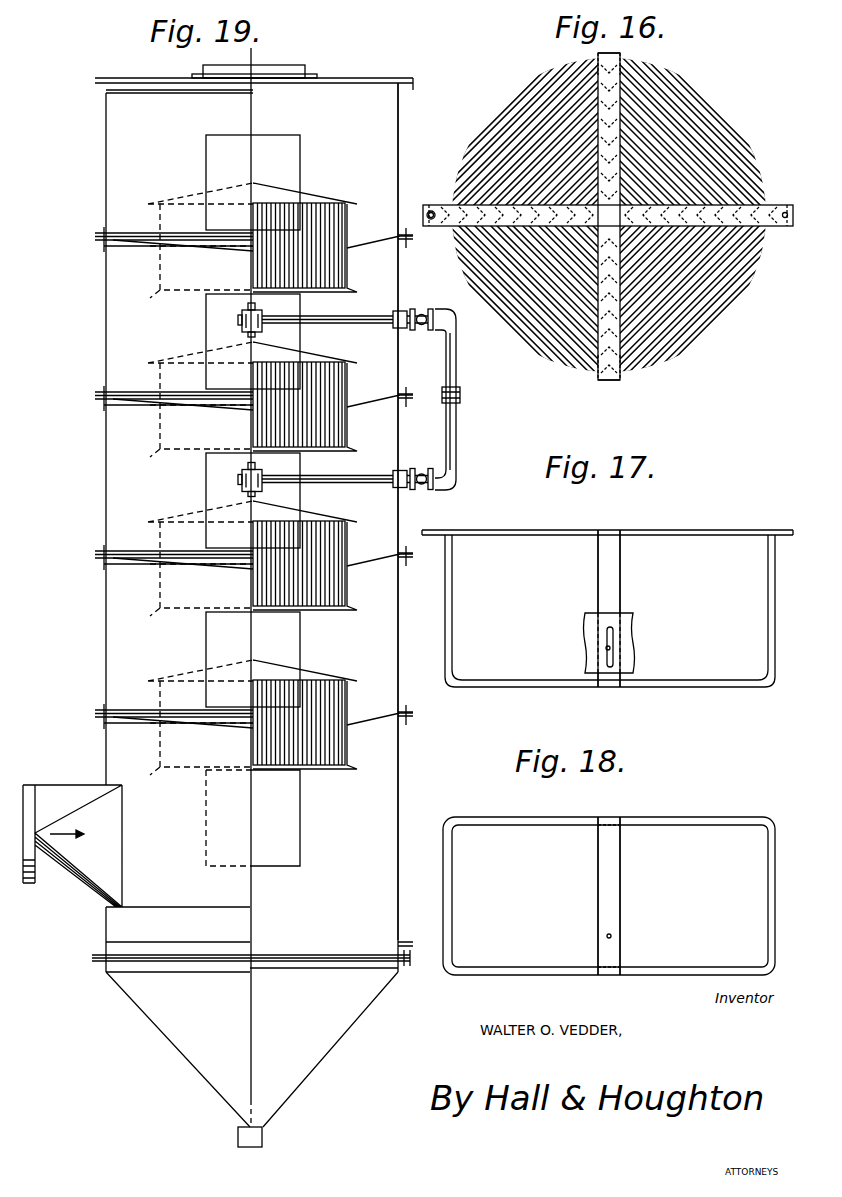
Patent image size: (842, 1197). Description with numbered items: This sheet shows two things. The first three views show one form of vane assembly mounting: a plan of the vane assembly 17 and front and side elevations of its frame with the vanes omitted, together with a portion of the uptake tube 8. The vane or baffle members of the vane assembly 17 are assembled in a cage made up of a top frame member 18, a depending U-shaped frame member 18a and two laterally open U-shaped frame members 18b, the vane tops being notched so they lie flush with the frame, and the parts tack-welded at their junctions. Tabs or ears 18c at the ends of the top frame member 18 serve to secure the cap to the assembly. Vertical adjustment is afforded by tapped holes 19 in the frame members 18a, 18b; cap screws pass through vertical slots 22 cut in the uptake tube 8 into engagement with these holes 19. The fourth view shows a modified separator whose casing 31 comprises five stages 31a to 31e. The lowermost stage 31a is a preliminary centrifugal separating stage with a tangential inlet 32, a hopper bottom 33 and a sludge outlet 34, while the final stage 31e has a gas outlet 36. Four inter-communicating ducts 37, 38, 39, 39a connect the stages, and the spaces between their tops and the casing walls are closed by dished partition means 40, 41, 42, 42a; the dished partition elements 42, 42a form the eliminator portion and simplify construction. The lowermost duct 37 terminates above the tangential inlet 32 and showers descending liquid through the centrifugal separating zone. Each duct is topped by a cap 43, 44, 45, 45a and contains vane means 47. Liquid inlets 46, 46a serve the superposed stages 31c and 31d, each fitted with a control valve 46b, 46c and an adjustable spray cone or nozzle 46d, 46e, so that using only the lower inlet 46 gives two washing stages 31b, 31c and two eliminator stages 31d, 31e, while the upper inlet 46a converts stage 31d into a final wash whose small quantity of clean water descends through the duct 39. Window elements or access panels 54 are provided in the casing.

In FIG. 17, the uptake tube 8 is at (625, 651).
In FIG. 16, the vane assembly 17 is at (609, 215).
In FIG. 16, the top frame member 18 is at (608, 216).
In FIG. 17, the top frame member 18 is at (605, 530).
In FIG. 18, the top frame member 18 is at (613, 820).
In FIG. 16, the depending U-shaped frame member 18a is at (422, 187).
In FIG. 17, the depending U-shaped frame member 18a is at (453, 592).
In FIG. 18, the depending U-shaped frame member 18a is at (610, 884).
In FIG. 16, the laterally open U-shaped frame members 18b is at (555, 230).
In FIG. 17, the laterally open U-shaped frame members 18b is at (608, 598).
In FIG. 18, the laterally open U-shaped frame members 18b is at (553, 806).
In FIG. 16, the tabs or ears 18c is at (616, 195).
In FIG. 17, the tabs or ears 18c is at (445, 531).
In FIG. 17, the tapped holes 19 is at (452, 649).
In FIG. 18, the tapped holes 19 is at (450, 935).
In FIG. 17, the vertical slots 22 is at (614, 666).
In FIG. 19, the casing 31 is at (415, 121).
In FIG. 19, the lowermost stage 31a is at (398, 761).
In FIG. 19, the washing stage 31b is at (398, 698).
In FIG. 19, the washing stage 31c is at (398, 429).
In FIG. 19, the liquid eliminator stage 31d is at (398, 361).
In FIG. 19, the final stage 31e is at (400, 147).
In FIG. 19, the tangential inlet 32 is at (72, 887).
In FIG. 19, the hopper bottom 33 is at (167, 1032).
In FIG. 19, the sludge outlet 34 is at (238, 1140).
In FIG. 19, the gas outlet 36 is at (305, 68).
In FIG. 19, the lowermost duct 37 is at (357, 743).
In FIG. 19, the inter-communicating duct 38 is at (363, 593).
In FIG. 19, the inter-communicating duct 39 is at (312, 407).
In FIG. 19, the inter-communicating duct 39a is at (350, 288).
In FIG. 19, the partition means 40 is at (357, 718).
In FIG. 19, the partition means 41 is at (370, 558).
In FIG. 19, the dished partition element 42 is at (400, 396).
In FIG. 19, the dished partition element 42a is at (355, 250).
In FIG. 19, the cap 43 is at (270, 670).
In FIG. 19, the cap 44 is at (295, 512).
In FIG. 19, the cap 45 is at (270, 372).
In FIG. 19, the cap 45a is at (275, 195).
In FIG. 19, the liquid inlet 46 is at (372, 467).
In FIG. 19, the liquid inlet 46a is at (337, 323).
In FIG. 19, the control valve 46b is at (440, 476).
In FIG. 19, the control valve 46c is at (421, 312).
In FIG. 19, the adjustable spray cone or nozzle 46d is at (250, 495).
In FIG. 19, the adjustable spray cone or nozzle 46e is at (240, 325).
In FIG. 19, the vane means 47 is at (297, 215).
In FIG. 19, the window elements or access panels 54 is at (206, 163).